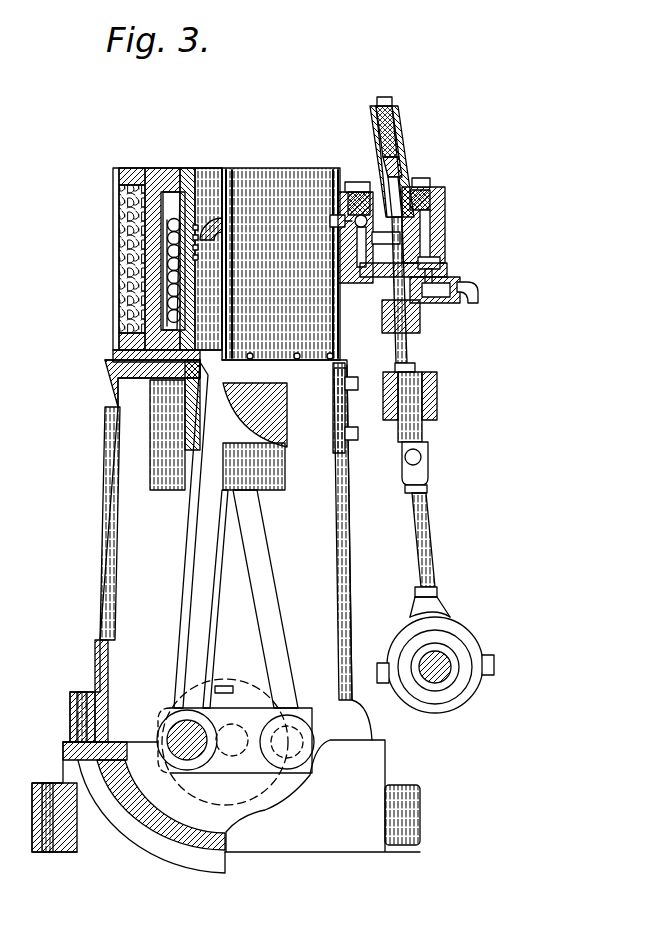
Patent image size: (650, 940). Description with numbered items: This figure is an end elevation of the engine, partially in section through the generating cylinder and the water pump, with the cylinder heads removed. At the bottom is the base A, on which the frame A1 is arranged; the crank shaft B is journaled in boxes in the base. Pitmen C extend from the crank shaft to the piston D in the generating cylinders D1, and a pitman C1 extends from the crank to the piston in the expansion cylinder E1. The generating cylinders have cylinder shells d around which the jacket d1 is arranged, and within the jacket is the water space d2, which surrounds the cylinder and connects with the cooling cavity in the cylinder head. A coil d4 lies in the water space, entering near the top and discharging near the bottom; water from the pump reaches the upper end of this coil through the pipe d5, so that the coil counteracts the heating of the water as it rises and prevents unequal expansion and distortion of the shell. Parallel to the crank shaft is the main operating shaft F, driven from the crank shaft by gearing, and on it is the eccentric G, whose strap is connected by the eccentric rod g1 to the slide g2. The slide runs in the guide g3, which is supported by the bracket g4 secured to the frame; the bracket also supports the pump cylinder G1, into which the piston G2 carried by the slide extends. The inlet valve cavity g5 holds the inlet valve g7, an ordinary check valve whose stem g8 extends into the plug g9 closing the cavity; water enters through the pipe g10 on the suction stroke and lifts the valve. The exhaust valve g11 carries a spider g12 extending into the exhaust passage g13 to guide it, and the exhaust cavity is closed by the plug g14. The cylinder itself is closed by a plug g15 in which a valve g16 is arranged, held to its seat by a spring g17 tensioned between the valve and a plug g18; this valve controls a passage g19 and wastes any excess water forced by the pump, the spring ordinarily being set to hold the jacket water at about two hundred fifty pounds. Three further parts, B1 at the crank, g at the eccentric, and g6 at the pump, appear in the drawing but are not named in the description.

The base A is at (226, 616).
The frame A1 is at (236, 550).
The crank shaft B is at (178, 767).
The crank pin B1 is at (296, 724).
The pitmen C is at (205, 545).
The pitman C1 is at (253, 542).
The piston D is at (196, 266).
The generating cylinders D1 is at (207, 178).
The cylinder shells d is at (190, 172).
The jacket d1 is at (156, 170).
The water space d2 is at (165, 219).
The coil d4 is at (180, 247).
The pipe d5 is at (340, 168).
The expansion cylinder E1 is at (217, 445).
The main operating shaft F is at (446, 651).
The eccentric G is at (458, 687).
The cylinder G1 is at (430, 218).
The piston G2 is at (415, 323).
The eccentric lugs g is at (483, 650).
The eccentric rod g1 is at (432, 543).
The slide g2 is at (412, 400).
The guide g3 is at (434, 372).
The bracket g4 is at (380, 272).
The inlet valve cavity g5 is at (440, 257).
The cam g6 is at (378, 240).
The inlet valve g7 is at (455, 268).
The stem g8 is at (440, 247).
The plug g9 is at (430, 200).
The pipe g10 is at (480, 283).
The exhaust valve g11 is at (358, 270).
The spider g12 is at (430, 185).
The exhaust passage g13 is at (380, 342).
The plug g14 is at (365, 190).
The plug g15 is at (395, 175).
The valve g16 is at (396, 160).
The spring g17 is at (392, 106).
The plug g18 is at (384, 97).
The passage g19 is at (398, 205).